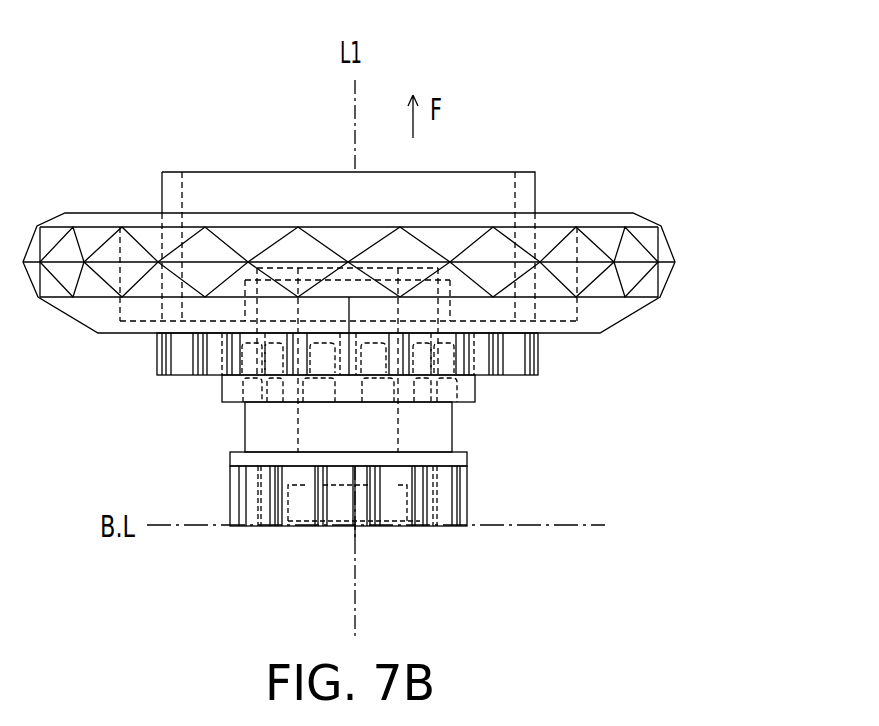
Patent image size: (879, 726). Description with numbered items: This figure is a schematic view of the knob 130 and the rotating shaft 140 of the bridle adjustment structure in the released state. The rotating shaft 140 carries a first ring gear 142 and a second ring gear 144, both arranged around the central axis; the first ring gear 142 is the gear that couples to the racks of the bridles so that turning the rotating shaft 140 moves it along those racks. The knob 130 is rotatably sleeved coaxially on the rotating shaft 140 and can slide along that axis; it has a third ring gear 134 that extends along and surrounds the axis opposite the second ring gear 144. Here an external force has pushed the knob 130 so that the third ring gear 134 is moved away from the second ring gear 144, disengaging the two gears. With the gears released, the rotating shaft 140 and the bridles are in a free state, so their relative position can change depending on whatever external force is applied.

The knob 130 is at (665, 248).
The third ring gear 134 is at (360, 357).
The rotating shaft 140 is at (452, 428).
The first ring gear 142 is at (468, 501).
The second ring gear 144 is at (328, 408).